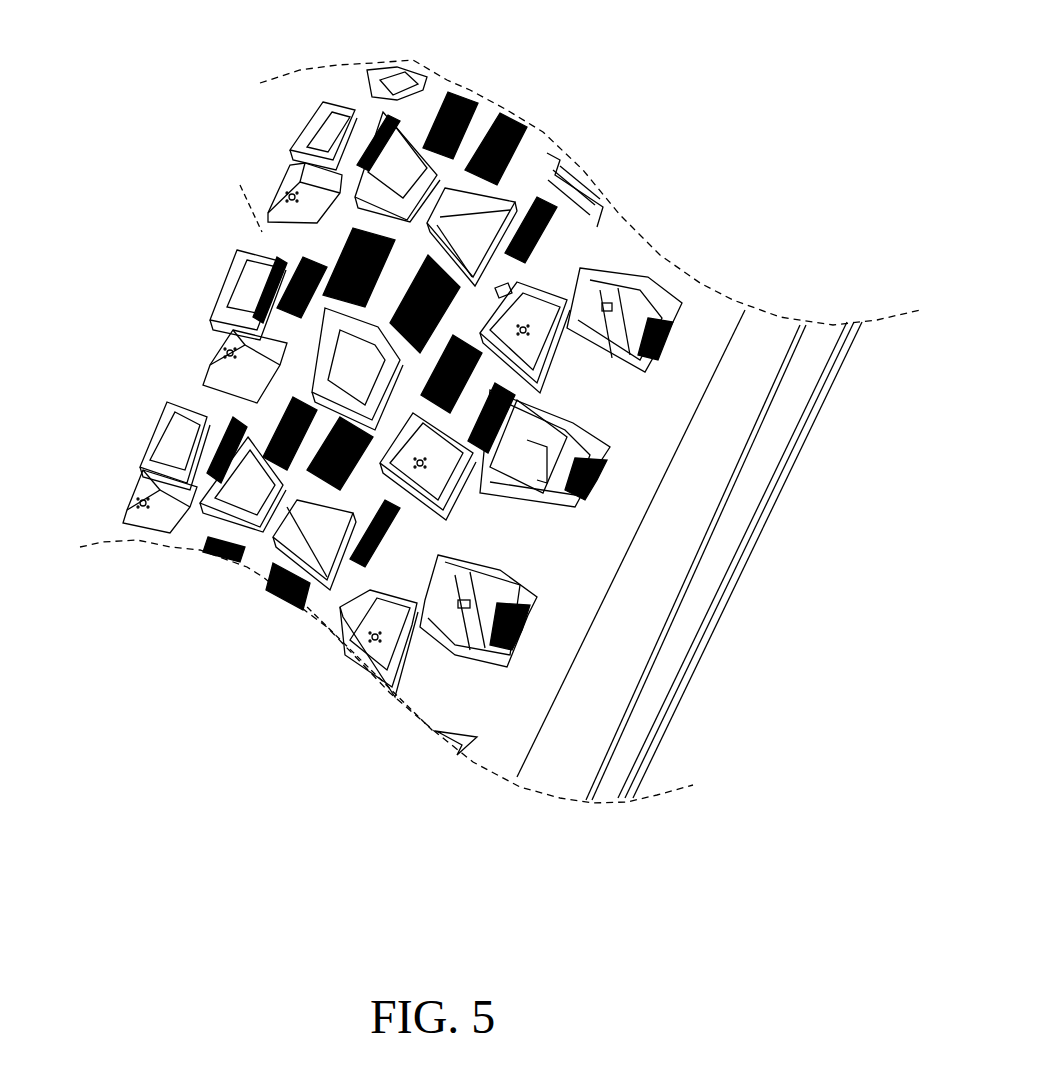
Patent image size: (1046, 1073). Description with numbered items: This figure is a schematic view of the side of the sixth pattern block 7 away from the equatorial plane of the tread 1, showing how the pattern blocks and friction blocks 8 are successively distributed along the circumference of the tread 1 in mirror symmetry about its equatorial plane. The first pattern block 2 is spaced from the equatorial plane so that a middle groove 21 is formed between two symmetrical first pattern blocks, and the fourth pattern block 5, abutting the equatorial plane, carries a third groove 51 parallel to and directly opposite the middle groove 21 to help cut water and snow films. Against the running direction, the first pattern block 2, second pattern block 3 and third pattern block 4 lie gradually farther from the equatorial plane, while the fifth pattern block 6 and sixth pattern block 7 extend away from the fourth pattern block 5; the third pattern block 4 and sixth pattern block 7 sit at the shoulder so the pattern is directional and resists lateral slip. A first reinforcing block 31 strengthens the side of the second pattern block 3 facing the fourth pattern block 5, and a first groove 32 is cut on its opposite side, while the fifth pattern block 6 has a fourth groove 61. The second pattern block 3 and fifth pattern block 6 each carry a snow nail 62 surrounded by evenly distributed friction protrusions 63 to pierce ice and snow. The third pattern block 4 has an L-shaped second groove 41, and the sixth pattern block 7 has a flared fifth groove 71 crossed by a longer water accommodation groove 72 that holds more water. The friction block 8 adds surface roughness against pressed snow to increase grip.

The tread 1 is at (702, 337).
The first pattern block 2 is at (467, 213).
The middle groove 21 is at (427, 100).
The second pattern block 3 is at (535, 292).
The first reinforcing block 31 is at (503, 290).
The first groove 32 is at (580, 303).
The third pattern block 4 is at (663, 480).
The second groove 41 is at (565, 470).
The fourth pattern block 5 is at (360, 368).
The third groove 51 is at (297, 270).
The fifth pattern block 6 is at (407, 448).
The fourth groove 61 is at (393, 480).
The snow nail 62 is at (460, 502).
The friction protrusions 63 is at (580, 487).
The sixth pattern block 7 is at (450, 598).
The fifth groove 71 is at (455, 640).
The water accommodation groove 72 is at (547, 719).
The friction block 8 is at (518, 637).